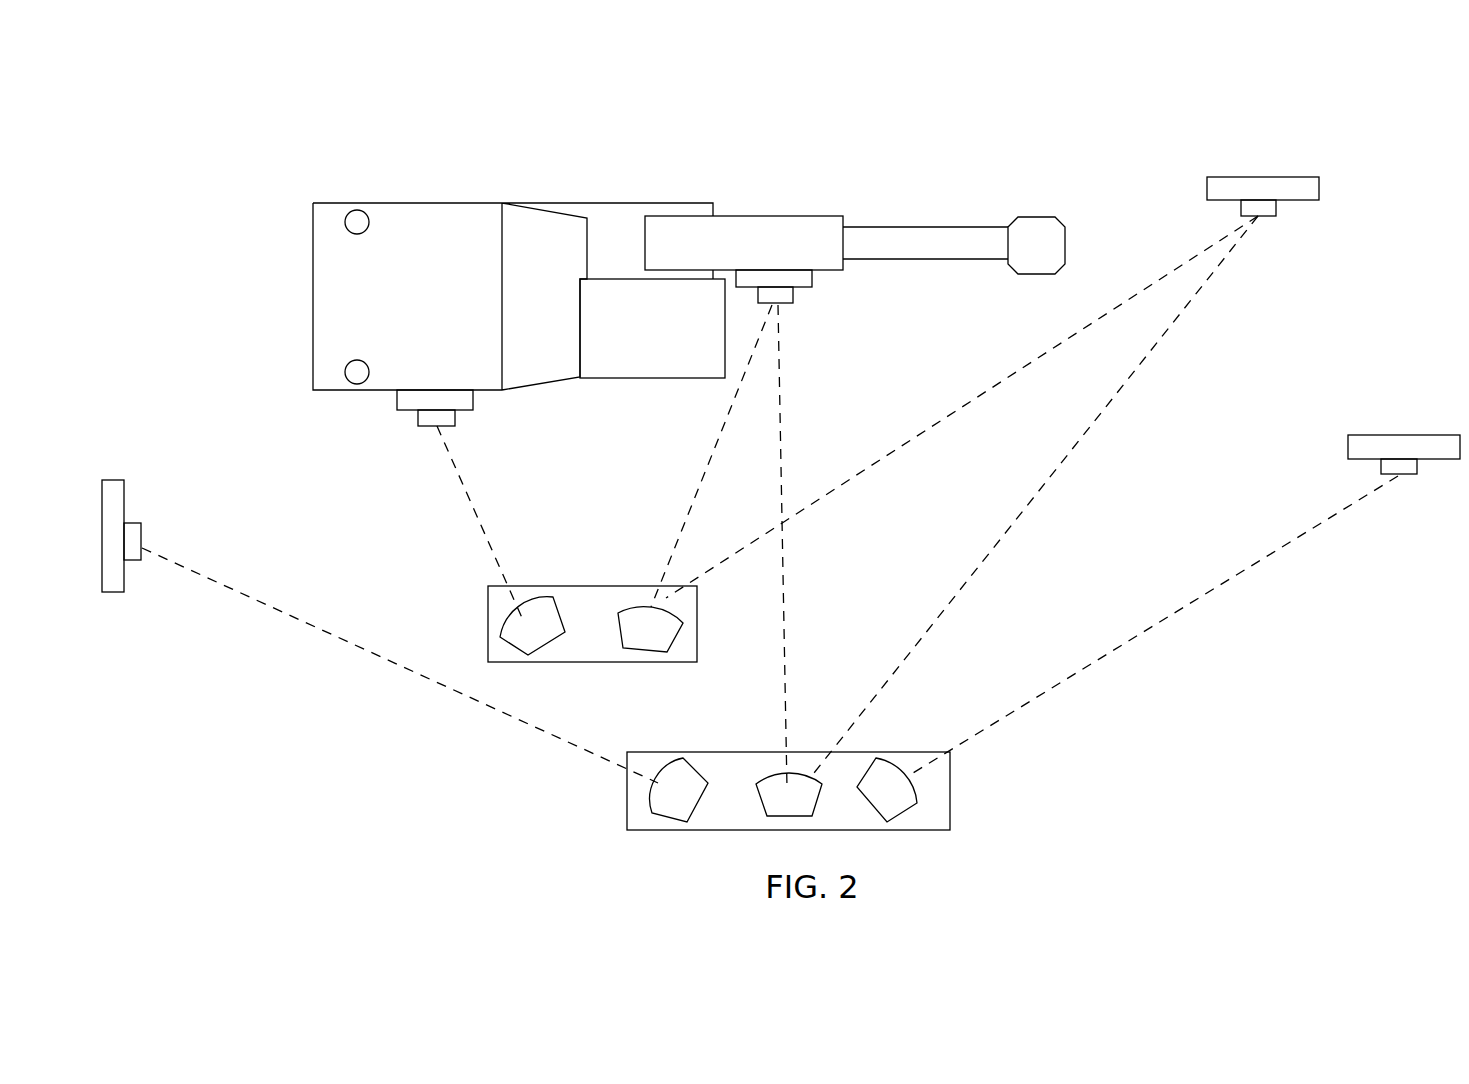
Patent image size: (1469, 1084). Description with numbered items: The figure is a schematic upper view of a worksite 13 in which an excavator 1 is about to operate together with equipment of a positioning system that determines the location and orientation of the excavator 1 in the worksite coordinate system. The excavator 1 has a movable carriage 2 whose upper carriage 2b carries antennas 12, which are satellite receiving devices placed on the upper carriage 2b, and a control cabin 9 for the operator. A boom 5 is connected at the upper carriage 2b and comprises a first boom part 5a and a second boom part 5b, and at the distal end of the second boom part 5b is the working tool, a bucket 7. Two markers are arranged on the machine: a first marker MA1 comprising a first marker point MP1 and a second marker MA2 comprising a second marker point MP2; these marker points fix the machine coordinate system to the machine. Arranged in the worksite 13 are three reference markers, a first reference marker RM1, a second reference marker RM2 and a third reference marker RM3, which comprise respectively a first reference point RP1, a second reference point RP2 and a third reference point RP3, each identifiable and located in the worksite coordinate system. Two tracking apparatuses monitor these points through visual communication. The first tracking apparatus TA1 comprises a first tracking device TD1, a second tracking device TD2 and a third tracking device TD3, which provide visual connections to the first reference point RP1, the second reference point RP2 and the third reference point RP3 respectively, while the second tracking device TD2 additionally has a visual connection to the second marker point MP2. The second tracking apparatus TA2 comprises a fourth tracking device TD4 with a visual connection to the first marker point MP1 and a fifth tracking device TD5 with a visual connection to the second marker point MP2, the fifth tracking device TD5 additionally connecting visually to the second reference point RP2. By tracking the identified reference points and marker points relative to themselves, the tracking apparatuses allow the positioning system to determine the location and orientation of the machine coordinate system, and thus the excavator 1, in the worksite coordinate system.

The excavator 1 is at (444, 183).
The movable carriage 2 is at (308, 307).
The upper carriage 2b is at (418, 312).
The boom 5 is at (808, 203).
The first boom part 5a is at (742, 230).
The second boom part 5b is at (930, 237).
The bucket 7 is at (1047, 233).
The control cabin 9 is at (619, 343).
The antennas 12 is at (357, 210).
The worksite 13 is at (633, 133).
The first marker MA1 is at (415, 398).
The second marker MA2 is at (800, 277).
The first marker point MP1 is at (432, 427).
The second marker point MP2 is at (783, 295).
The first reference marker RM1 is at (112, 488).
The second reference marker RM2 is at (1279, 186).
The third reference marker RM3 is at (1418, 442).
The first reference point RP1 is at (143, 537).
The second reference point RP2 is at (1277, 210).
The third reference point RP3 is at (1418, 467).
The first tracking apparatus TA1 is at (635, 805).
The second tracking apparatus TA2 is at (608, 659).
The first tracking device TD1 is at (673, 773).
The second tracking device TD2 is at (770, 790).
The third tracking device TD3 is at (893, 778).
The fourth tracking device TD4 is at (527, 630).
The fifth tracking device TD5 is at (640, 643).